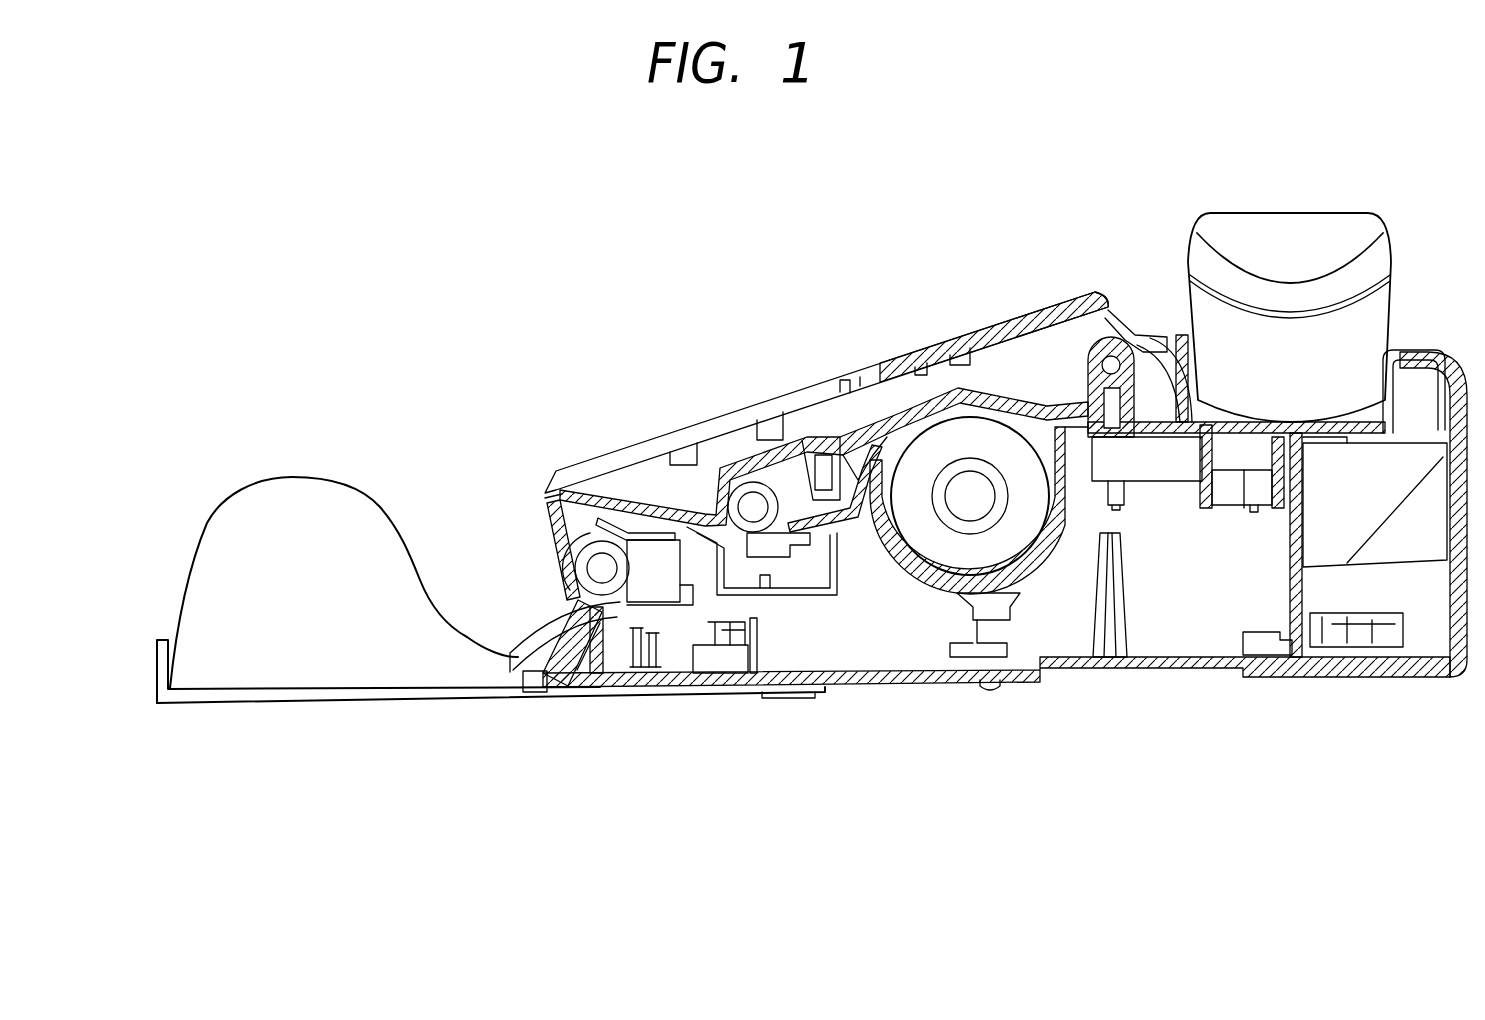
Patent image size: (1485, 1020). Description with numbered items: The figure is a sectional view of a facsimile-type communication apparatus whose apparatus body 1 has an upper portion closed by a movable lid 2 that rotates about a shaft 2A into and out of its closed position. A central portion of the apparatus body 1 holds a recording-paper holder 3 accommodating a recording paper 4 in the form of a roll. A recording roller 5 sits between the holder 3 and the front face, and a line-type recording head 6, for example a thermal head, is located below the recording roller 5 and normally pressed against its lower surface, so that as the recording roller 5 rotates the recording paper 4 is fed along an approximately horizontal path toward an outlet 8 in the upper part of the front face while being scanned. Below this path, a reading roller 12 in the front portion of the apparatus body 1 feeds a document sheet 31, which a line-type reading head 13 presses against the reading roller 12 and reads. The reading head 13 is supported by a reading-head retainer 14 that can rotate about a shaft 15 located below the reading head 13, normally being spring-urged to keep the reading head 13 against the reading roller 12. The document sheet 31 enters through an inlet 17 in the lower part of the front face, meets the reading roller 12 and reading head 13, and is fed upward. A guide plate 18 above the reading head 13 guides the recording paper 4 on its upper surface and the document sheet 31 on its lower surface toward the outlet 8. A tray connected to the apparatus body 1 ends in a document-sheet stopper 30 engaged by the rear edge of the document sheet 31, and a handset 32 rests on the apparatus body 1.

The apparatus body 1 is at (903, 688).
The movable lid 2 is at (688, 432).
The shaft 2A is at (1128, 333).
The recording-paper holder 3 is at (1033, 570).
The recording paper 4 is at (947, 565).
The recording roller 5 is at (748, 488).
The recording head 6 is at (780, 552).
The outlet 8 is at (546, 502).
The reading roller 12 is at (598, 568).
The reading head 13 is at (659, 565).
The reading-head retainer 14 is at (700, 590).
The shaft 15 is at (649, 626).
The inlet 17 is at (530, 628).
The guide plate 18 is at (632, 520).
The document-sheet stopper 30 is at (160, 703).
The document sheet 31 is at (325, 502).
The handset 32 is at (1340, 218).